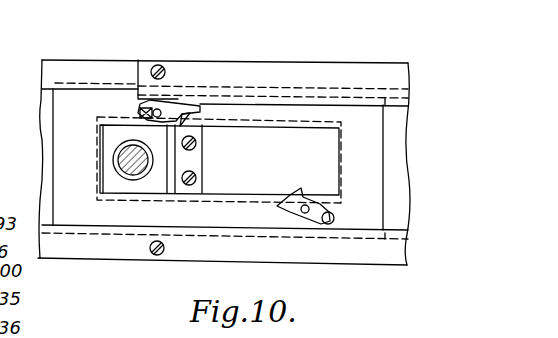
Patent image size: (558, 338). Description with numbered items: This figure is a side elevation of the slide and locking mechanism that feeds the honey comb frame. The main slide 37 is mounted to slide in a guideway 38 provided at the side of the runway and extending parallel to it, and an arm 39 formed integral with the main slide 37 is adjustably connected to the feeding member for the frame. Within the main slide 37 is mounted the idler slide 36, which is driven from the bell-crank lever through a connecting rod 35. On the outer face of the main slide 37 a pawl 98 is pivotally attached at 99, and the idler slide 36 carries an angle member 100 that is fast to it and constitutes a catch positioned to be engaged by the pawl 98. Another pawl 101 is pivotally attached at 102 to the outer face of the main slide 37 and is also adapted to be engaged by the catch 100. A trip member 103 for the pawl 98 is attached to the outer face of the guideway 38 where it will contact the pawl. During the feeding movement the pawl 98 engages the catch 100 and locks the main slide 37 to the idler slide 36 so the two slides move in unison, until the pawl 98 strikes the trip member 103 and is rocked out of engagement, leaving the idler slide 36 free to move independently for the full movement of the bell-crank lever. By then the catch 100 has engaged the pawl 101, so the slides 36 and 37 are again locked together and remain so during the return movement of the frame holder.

The connecting rod 35 is at (130, 162).
The idler slide 36 is at (114, 184).
The main slide 37 is at (65, 132).
The guideway 38 is at (187, 235).
The arm 39 is at (218, 97).
The pawl 98 is at (181, 120).
The pivot 99 is at (143, 104).
The angle member 100 is at (172, 183).
The pawl 101 is at (292, 208).
The pivot 102 is at (305, 213).
The trip member 103 is at (141, 78).